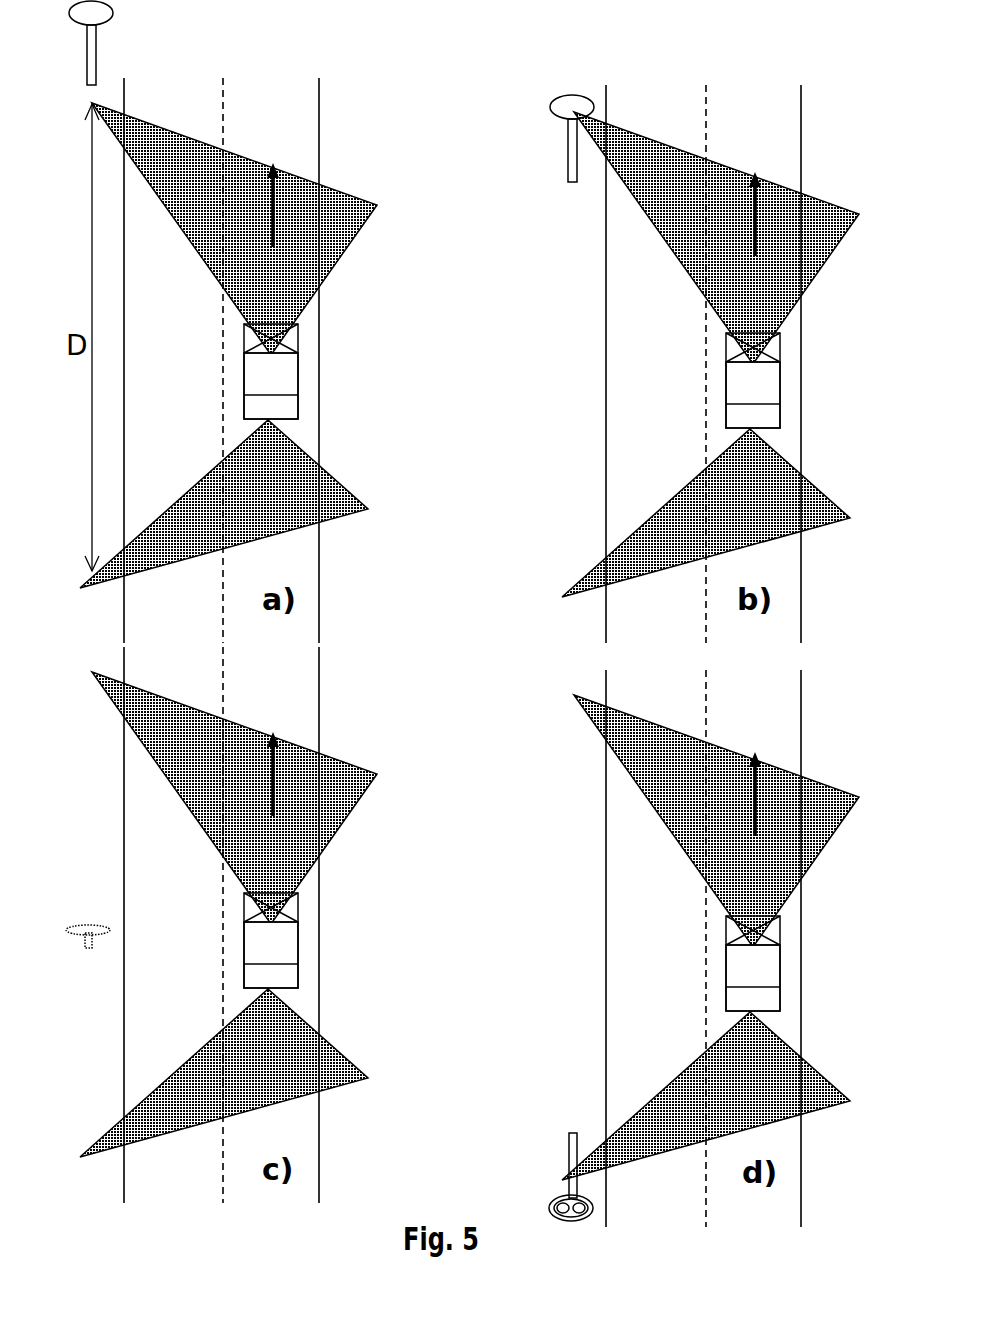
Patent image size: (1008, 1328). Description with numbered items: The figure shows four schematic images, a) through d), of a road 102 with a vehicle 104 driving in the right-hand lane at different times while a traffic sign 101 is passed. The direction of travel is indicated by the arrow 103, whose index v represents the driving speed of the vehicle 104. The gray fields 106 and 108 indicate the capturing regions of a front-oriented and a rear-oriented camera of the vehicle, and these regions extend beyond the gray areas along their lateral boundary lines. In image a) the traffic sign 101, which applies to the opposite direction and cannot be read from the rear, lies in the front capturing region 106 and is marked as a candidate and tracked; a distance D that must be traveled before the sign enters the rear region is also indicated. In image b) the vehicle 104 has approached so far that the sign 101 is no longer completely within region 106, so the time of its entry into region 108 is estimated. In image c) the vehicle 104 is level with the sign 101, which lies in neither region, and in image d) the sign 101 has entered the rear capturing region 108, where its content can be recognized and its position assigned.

The traffic sign 101 is at (128, 48).
The road 102 is at (462, 652).
The arrow 103 is at (278, 184).
The vehicle 104 is at (303, 382).
The capturing region of the camera oriented to the front 106 is at (475, 525).
The capturing region of the camera oriented to the rear 108 is at (465, 800).